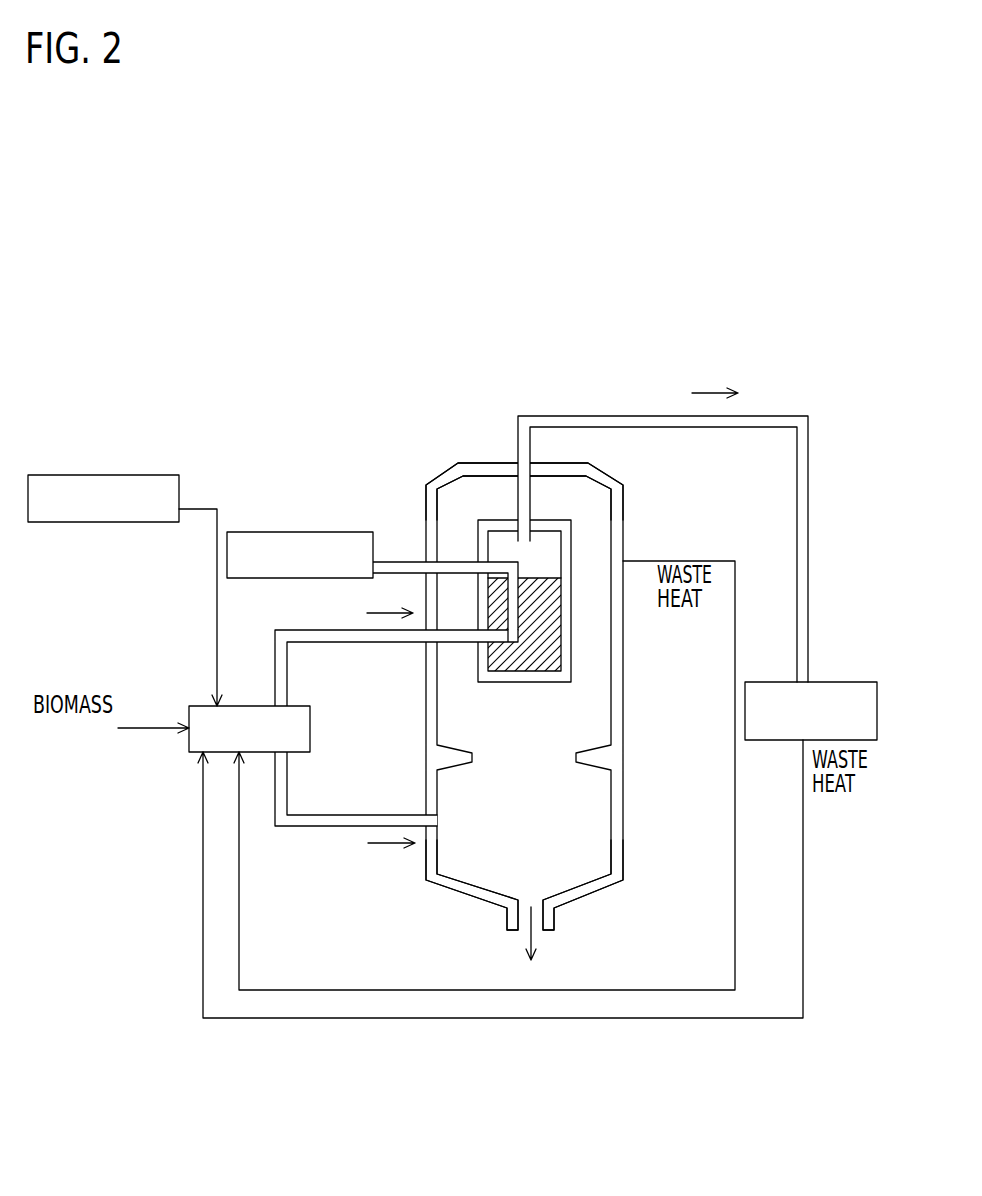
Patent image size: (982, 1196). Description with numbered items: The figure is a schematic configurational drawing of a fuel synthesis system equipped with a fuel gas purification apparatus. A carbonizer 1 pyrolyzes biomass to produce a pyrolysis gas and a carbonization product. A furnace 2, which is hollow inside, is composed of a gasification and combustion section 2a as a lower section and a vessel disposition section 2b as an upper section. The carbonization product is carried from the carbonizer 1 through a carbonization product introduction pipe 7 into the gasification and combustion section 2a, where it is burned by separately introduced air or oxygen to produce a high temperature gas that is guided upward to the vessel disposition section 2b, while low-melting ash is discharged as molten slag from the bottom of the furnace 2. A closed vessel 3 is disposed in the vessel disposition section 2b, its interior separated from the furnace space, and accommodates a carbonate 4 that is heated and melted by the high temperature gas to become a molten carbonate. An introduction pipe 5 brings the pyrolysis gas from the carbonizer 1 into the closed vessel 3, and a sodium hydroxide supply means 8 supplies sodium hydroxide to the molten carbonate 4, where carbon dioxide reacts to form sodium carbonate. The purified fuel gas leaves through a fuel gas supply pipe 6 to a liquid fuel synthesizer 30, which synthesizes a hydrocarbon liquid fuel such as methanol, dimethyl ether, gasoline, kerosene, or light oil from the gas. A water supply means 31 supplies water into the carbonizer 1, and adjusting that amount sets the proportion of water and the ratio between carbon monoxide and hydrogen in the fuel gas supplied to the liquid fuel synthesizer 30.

The carbonizer 1 is at (205, 706).
The furnace 2 is at (448, 470).
The gasification and combustion section 2a is at (575, 842).
The vessel disposition section 2b is at (450, 506).
The closed vessel 3 is at (478, 543).
The carbonate 4 is at (528, 607).
The introduction pipe 5 is at (276, 665).
The fuel gas supply pipe 6 is at (540, 416).
The carbonization product introduction pipe 7 is at (283, 828).
The sodium hydroxide supply means 8 is at (305, 532).
The liquid fuel synthesizer 30 is at (835, 682).
The water supply means 31 is at (52, 475).